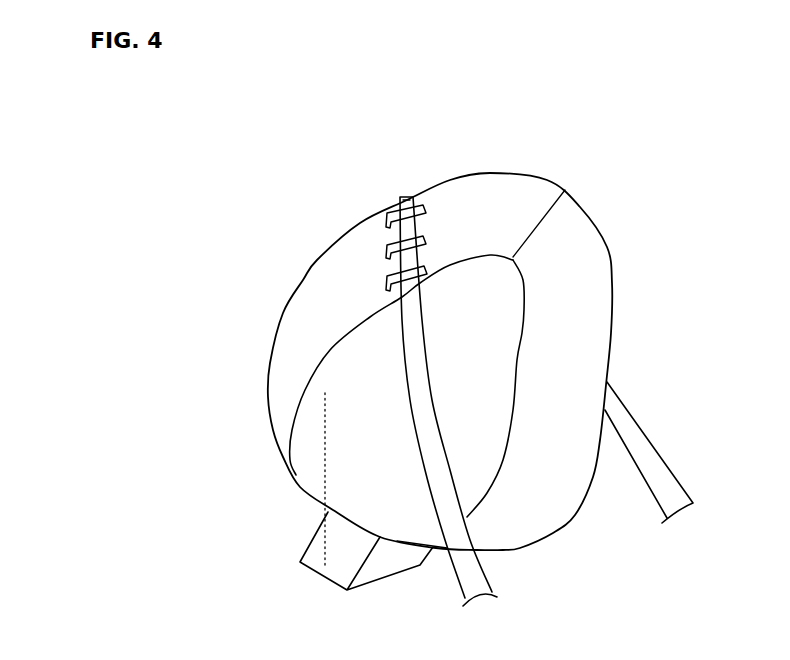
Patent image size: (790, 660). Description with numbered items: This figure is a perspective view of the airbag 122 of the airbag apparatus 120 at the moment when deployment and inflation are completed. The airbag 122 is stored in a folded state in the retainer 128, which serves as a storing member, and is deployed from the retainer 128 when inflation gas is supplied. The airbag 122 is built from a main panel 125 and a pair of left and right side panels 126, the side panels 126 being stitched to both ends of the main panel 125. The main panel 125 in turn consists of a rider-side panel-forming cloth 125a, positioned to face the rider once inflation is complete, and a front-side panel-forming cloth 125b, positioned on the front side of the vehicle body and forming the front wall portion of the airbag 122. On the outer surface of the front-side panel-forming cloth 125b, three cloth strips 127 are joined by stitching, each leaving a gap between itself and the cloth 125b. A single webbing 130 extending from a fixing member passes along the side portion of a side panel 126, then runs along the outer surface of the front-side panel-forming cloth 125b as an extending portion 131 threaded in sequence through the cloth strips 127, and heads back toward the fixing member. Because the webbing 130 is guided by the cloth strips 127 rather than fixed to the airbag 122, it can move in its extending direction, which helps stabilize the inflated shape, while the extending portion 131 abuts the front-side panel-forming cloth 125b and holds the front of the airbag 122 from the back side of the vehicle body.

The airbag apparatus 120 is at (575, 107).
The airbag 122 is at (498, 162).
The main panel 125 is at (657, 120).
The rider-side panel-forming cloth 125a is at (585, 258).
The front-side panel-forming cloth 125b is at (537, 195).
The side panel 126 is at (333, 453).
The cloth strips 127 is at (391, 280).
The retainer 128 is at (376, 589).
The webbing 130 is at (662, 449).
The extending portion 131 is at (405, 225).